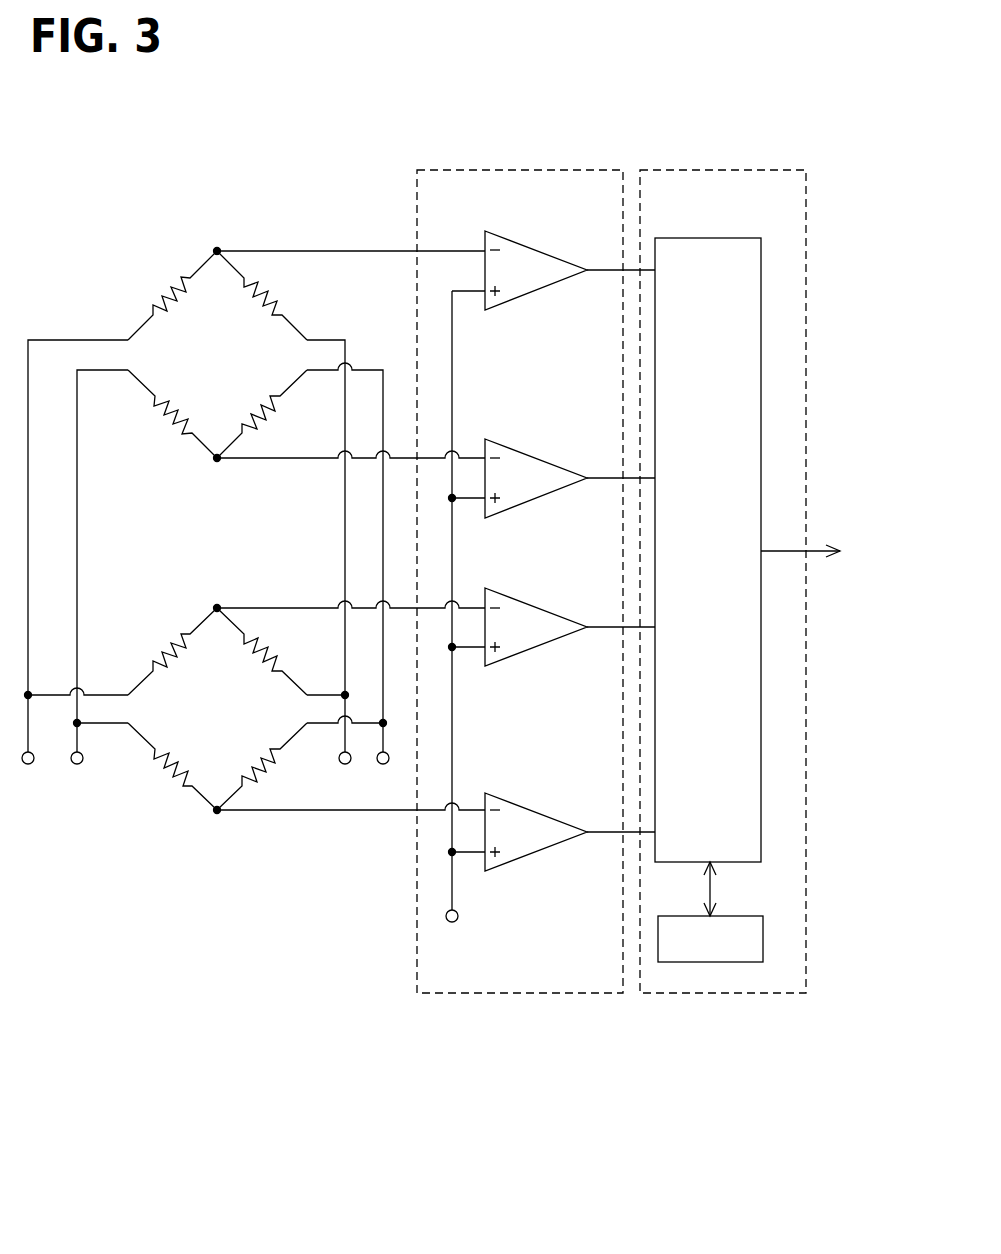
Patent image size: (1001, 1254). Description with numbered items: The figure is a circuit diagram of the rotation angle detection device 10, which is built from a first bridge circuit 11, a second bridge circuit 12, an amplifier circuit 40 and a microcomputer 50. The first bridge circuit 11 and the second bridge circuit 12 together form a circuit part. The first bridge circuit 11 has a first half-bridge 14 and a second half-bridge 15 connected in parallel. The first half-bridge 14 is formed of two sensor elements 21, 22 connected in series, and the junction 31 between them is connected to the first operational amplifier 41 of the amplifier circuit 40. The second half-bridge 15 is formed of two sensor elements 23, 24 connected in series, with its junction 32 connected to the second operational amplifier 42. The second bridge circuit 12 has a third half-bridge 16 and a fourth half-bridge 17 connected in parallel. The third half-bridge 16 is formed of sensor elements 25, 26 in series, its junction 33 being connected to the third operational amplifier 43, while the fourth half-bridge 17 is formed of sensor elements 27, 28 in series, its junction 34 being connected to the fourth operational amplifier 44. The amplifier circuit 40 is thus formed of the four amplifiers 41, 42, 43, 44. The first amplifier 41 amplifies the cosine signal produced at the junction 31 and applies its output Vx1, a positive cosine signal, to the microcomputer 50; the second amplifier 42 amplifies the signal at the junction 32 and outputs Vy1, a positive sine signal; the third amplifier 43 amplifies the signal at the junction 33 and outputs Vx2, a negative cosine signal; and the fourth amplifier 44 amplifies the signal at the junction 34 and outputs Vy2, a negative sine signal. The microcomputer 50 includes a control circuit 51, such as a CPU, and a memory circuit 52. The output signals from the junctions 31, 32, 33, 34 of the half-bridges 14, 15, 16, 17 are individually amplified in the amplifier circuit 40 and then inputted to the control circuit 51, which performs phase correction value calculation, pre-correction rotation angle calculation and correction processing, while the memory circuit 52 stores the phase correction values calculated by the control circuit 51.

The rotation angle detection device 10 is at (175, 975).
The first bridge circuit 11 is at (253, 170).
The second bridge circuit 12 is at (80, 898).
The first half-bridge 14 is at (233, 257).
The second half-bridge 15 is at (300, 680).
The third half-bridge 16 is at (200, 446).
The fourth half-bridge 17 is at (203, 798).
The sensor element 21 is at (168, 292).
The sensor element 22 is at (268, 292).
The sensor element 23 is at (170, 652).
The sensor element 24 is at (270, 645).
The sensor element 25 is at (168, 415).
The sensor element 26 is at (272, 408).
The sensor element 27 is at (168, 767).
The sensor element 28 is at (272, 760).
The junction 31 is at (215, 250).
The junction 32 is at (216, 606).
The junction 33 is at (218, 460).
The junction 34 is at (218, 812).
The amplifier circuit 40 is at (587, 993).
The first operational amplifier 41 is at (540, 250).
The second operational amplifier 42 is at (540, 606).
The third operational amplifier 43 is at (540, 458).
The fourth operational amplifier 44 is at (540, 810).
The microcomputer 50 is at (757, 993).
The control circuit 51 is at (763, 753).
The memory circuit 52 is at (763, 932).